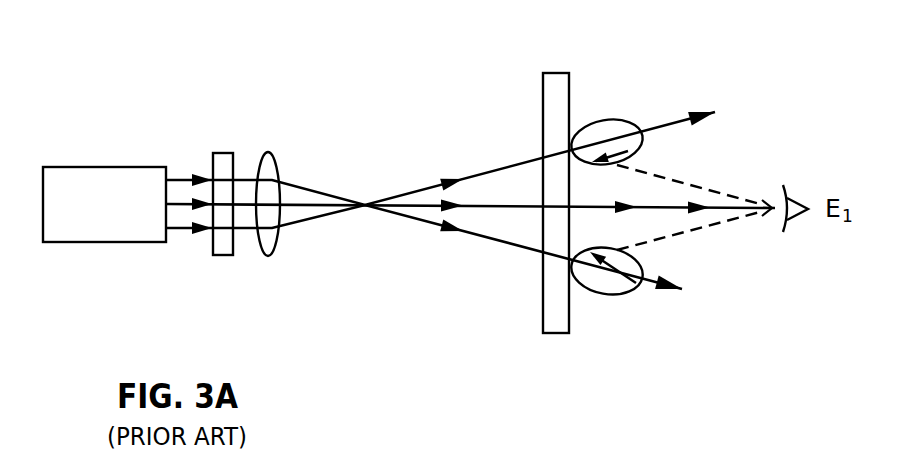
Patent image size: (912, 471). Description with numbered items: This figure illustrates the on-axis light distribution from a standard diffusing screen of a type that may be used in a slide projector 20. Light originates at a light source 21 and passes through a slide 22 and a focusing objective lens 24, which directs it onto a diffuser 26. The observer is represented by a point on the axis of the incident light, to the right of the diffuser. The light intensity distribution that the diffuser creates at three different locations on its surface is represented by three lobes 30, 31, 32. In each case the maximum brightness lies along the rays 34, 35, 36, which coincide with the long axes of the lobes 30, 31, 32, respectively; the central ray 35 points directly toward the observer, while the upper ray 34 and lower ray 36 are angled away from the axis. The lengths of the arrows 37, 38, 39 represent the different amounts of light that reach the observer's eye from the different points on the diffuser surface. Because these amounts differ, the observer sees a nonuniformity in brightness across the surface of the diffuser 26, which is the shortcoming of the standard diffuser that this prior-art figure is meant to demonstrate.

The slide projector 20 is at (152, 82).
The light source 21 is at (90, 167).
The slide 22 is at (230, 255).
The focusing objective lens 24 is at (268, 155).
The diffuser 26 is at (558, 73).
The lobe 30 is at (627, 118).
The lobe 31 is at (670, 183).
The lobe 32 is at (608, 297).
The ray 34 is at (428, 187).
The ray 35 is at (478, 203).
The ray 36 is at (428, 223).
The arrow 37 is at (643, 148).
The arrow 38 is at (670, 232).
The arrow 39 is at (638, 292).